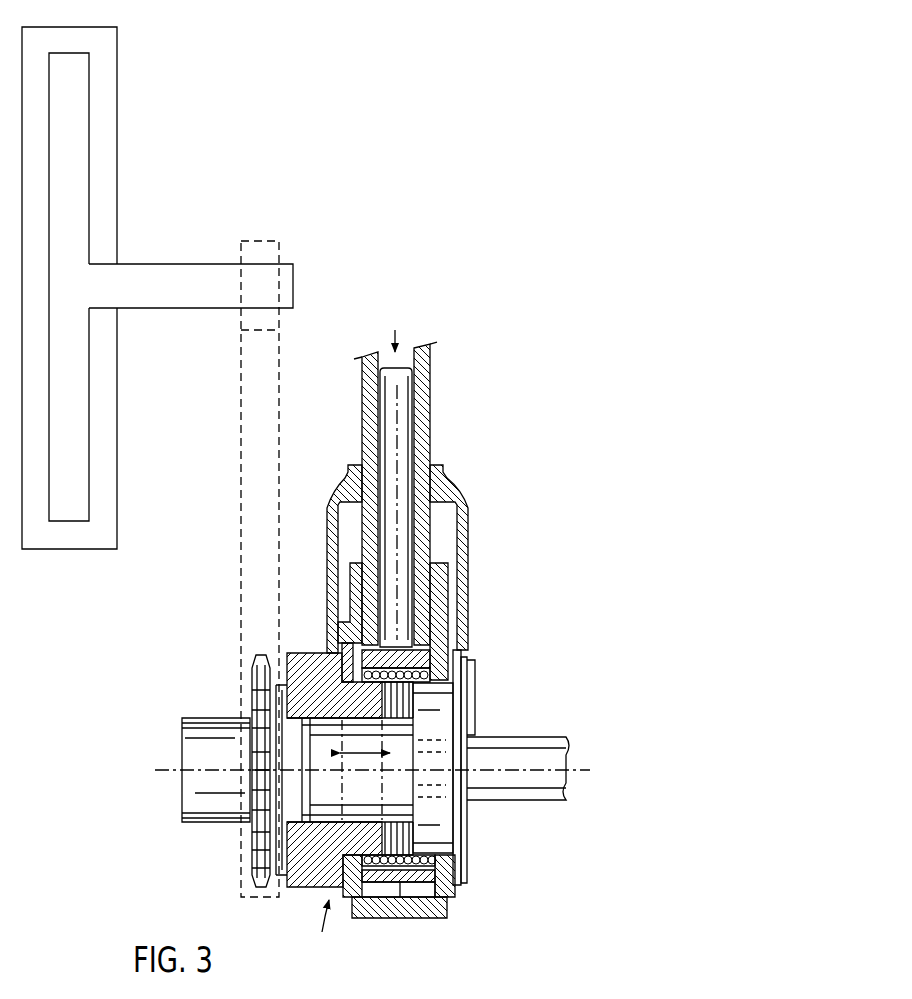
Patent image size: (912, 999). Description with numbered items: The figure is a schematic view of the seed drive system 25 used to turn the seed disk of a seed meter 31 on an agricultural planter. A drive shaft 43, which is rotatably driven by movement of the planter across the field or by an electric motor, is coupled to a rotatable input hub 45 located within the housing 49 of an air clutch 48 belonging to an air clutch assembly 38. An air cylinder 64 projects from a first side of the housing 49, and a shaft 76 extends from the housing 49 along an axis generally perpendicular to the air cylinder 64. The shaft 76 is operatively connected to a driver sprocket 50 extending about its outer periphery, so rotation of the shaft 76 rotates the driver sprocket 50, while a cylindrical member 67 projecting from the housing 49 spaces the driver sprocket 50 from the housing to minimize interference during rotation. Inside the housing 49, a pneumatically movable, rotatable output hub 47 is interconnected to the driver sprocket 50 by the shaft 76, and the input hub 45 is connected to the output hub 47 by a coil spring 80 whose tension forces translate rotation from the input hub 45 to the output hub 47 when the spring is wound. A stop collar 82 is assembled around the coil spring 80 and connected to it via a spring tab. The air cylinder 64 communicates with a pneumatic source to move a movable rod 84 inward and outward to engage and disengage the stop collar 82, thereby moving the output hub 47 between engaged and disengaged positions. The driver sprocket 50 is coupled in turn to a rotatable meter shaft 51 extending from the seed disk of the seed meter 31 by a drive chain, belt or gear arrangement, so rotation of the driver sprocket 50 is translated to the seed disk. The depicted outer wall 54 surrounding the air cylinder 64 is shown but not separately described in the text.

The seed drive system 25 is at (520, 308).
The seed meter 31 is at (120, 132).
The air clutch assembly 38 is at (307, 937).
The drive shaft 43 is at (533, 795).
The rotatable input hub 45 is at (468, 868).
The rotatable output hub 47 is at (312, 888).
The air clutch 48 is at (348, 580).
The housing 49 is at (448, 912).
The driver sprocket 50 is at (255, 876).
The meter shaft 51 is at (192, 263).
The housing 54 is at (464, 487).
The air cylinder 64 is at (431, 362).
The cylindrical member 67 is at (274, 655).
The shaft 76 is at (293, 713).
The coil spring 80 is at (418, 658).
The stop collar 82 is at (372, 655).
The movable rod 84 is at (396, 420).